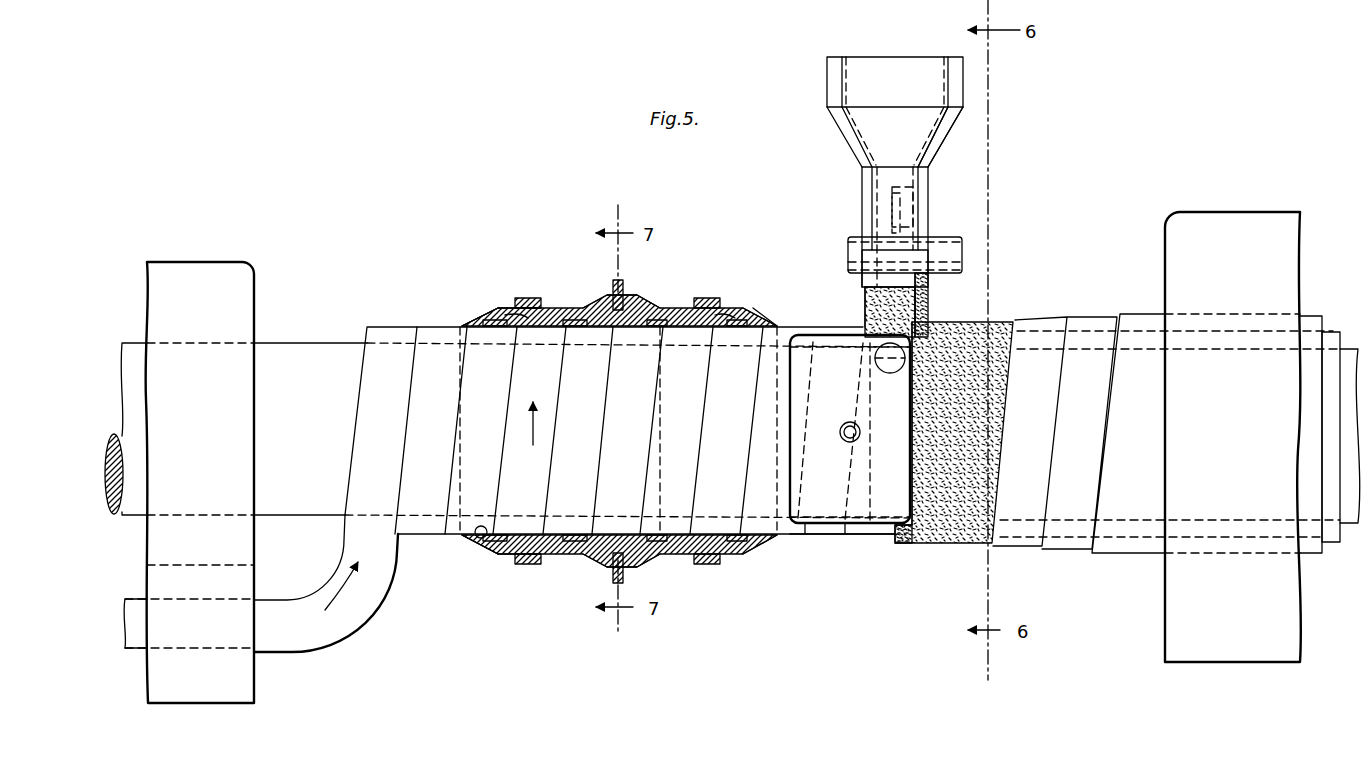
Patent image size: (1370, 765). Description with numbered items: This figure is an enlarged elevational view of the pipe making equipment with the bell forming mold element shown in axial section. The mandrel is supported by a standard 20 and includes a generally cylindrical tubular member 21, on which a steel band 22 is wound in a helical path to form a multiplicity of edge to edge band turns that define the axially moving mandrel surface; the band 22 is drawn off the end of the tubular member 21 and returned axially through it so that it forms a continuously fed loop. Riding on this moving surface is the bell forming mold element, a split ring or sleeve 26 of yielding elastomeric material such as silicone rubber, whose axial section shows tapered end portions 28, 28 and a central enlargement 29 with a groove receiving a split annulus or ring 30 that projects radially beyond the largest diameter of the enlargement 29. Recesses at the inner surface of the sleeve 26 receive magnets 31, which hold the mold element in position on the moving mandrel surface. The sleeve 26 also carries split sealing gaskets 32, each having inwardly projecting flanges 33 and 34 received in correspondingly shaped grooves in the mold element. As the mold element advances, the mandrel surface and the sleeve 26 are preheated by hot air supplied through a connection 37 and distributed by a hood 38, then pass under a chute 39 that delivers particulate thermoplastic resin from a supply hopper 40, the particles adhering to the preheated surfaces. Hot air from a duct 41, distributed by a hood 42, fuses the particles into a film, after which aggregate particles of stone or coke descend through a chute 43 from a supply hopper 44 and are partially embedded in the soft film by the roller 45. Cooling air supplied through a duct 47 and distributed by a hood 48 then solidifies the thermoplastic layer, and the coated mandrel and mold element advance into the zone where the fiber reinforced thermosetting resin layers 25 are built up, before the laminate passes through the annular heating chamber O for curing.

The standard 20 is at (216, 262).
The tubular member 21 is at (322, 341).
The steel band 22 is at (327, 637).
The fiber reinforced thermosetting resin layers 25 is at (1080, 317).
The split ring or sleeve 26 is at (570, 300).
The tapered end portions 28 is at (477, 317).
The central enlargement 29 is at (635, 300).
The split annulus or ring 30 is at (612, 287).
The magnets 31 is at (753, 311).
The sealing gaskets 32 is at (523, 298).
The gasket flange 33 is at (513, 313).
The gasket flange 34 is at (547, 312).
The hot air connection 37 is at (845, 441).
The hood 38 is at (857, 528).
The chute 39 is at (862, 210).
The supply hopper 40 is at (848, 142).
The duct 41 is at (930, 175).
The hood 42 is at (928, 240).
The chute 43 is at (925, 204).
The supply hopper 44 is at (945, 128).
The roller 45 is at (875, 350).
The duct 47 is at (942, 470).
The hood 48 is at (1002, 467).
The annular heating chamber O is at (1258, 212).